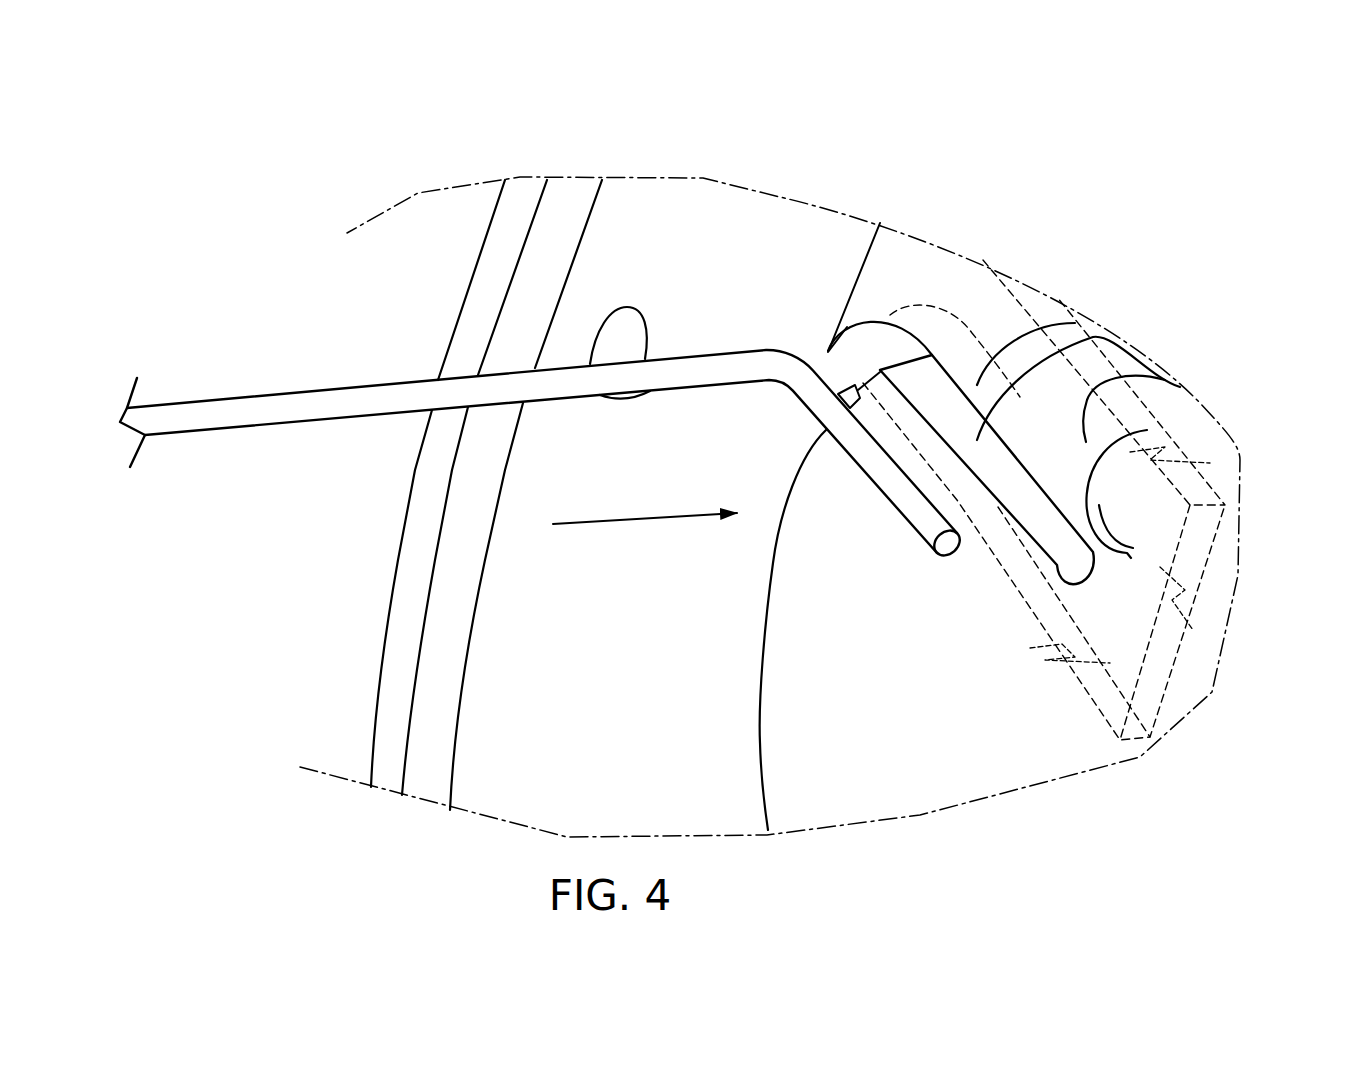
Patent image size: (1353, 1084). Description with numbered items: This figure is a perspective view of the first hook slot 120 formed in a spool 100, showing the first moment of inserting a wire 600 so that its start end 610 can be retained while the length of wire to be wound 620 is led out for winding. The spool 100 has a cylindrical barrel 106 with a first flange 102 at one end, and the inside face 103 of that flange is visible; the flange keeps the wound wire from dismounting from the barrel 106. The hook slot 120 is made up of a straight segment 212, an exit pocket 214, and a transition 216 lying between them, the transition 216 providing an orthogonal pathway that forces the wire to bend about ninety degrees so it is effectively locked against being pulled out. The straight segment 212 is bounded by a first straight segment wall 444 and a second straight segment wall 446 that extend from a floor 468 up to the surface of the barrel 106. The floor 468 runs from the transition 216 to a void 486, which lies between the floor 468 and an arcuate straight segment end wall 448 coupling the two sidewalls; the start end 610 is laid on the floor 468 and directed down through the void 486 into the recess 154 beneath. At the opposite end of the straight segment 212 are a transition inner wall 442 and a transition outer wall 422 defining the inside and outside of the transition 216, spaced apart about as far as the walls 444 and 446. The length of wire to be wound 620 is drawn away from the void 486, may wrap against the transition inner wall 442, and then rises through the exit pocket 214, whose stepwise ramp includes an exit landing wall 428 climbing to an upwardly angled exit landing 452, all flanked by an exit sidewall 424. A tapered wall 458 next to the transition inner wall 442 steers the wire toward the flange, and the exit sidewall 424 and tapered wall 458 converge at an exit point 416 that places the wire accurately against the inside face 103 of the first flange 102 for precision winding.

The spool 100 is at (557, 142).
The first flange 102 is at (390, 726).
The inside face 103 is at (550, 432).
The cylindrical barrel 106 is at (1025, 743).
The first hook slot 120 is at (798, 282).
The recess 154 is at (1180, 387).
The straight segment 212 is at (1005, 532).
The exit pocket 214 is at (780, 427).
The transition 216 is at (830, 312).
The exit point 416 is at (792, 484).
The transition outer wall 422 is at (860, 382).
The exit sidewall 424 is at (853, 355).
The exit landing wall 428 is at (867, 372).
The transition inner wall 442 is at (880, 372).
The first straight segment wall 444 is at (1080, 324).
The second straight segment wall 446 is at (937, 353).
The straight segment end wall 448 is at (1110, 577).
The exit landing 452 is at (822, 441).
The tapered wall 458 is at (792, 484).
The floor 468 is at (1075, 323).
The void 486 is at (1147, 430).
The wire 600 is at (772, 362).
The start end 610 is at (928, 530).
The length of wire to be wound 620 is at (301, 408).